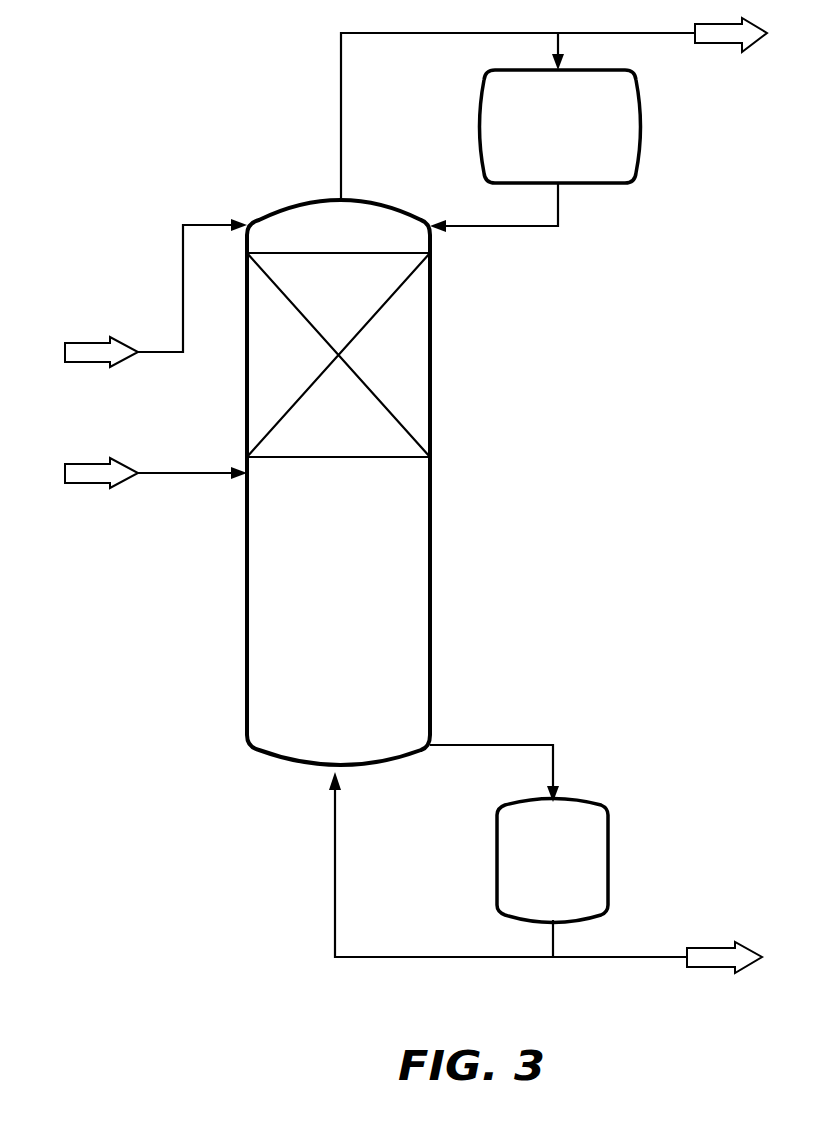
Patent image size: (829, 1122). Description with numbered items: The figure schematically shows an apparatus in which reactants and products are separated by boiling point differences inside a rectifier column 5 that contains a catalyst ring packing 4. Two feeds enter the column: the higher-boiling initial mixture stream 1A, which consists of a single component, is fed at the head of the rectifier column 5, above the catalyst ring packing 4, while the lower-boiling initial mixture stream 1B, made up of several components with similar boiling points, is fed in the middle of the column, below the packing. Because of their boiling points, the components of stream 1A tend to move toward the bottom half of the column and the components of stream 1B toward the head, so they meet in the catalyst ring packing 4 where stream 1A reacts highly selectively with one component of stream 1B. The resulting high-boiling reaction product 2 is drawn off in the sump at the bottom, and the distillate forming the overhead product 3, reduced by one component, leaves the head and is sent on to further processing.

The initial mixture stream 1A is at (139, 294).
The initial mixture stream 1B is at (139, 474).
The reaction product 2 is at (736, 960).
The overhead product 3 is at (742, 36).
The catalyst ring packing 4 is at (408, 364).
The rectifier column 5 is at (405, 548).